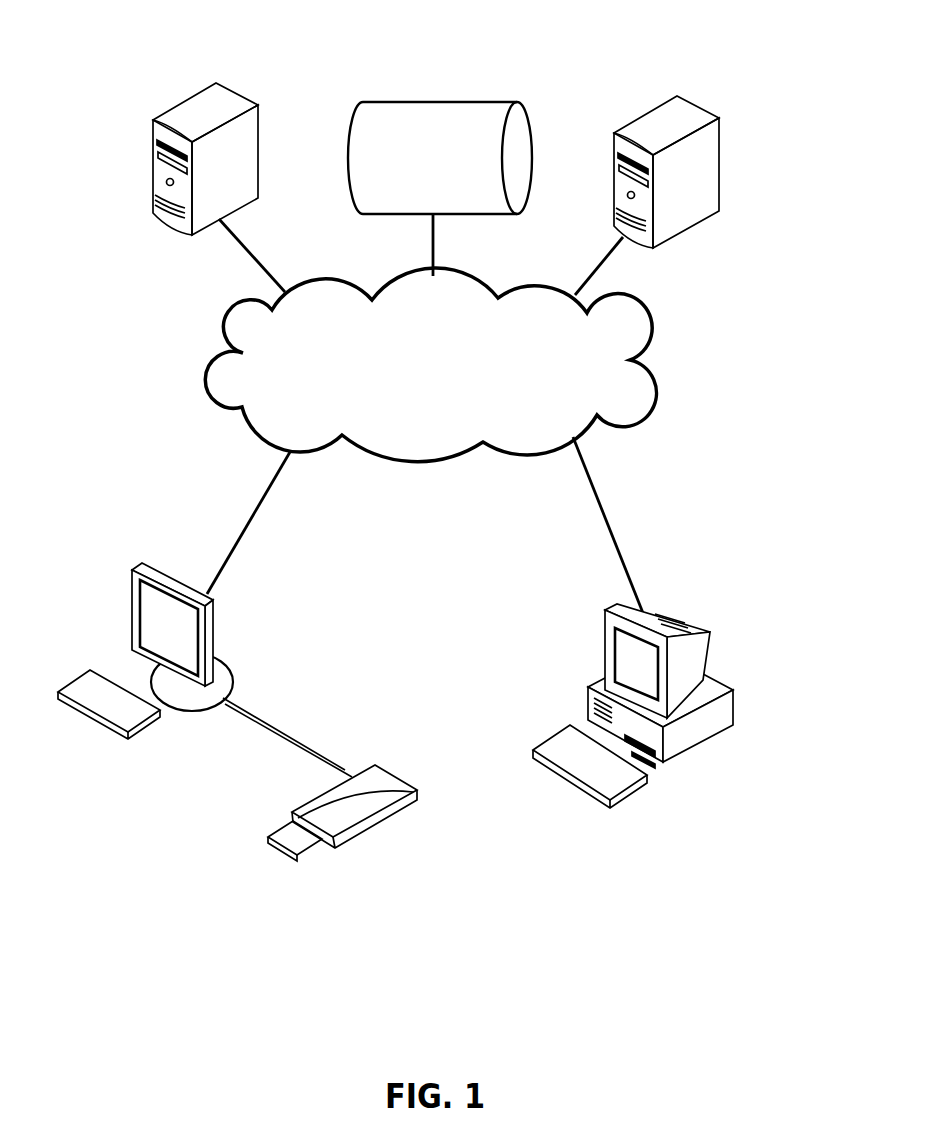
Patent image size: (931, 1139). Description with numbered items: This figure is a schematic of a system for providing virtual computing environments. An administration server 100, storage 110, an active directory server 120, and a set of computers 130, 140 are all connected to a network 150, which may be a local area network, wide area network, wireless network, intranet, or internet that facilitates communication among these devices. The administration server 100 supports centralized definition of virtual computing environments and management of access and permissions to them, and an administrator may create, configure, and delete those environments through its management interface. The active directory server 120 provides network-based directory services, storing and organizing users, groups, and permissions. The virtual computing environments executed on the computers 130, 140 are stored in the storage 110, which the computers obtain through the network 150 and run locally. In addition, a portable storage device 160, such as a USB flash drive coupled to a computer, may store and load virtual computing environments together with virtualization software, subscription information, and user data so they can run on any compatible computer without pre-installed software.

The administration server 100 is at (214, 131).
The storage 110 is at (440, 158).
The active directory server 120 is at (675, 128).
The computer 130 is at (145, 666).
The computer 140 is at (671, 706).
The network 150 is at (430, 365).
The portable storage device 160 is at (357, 860).